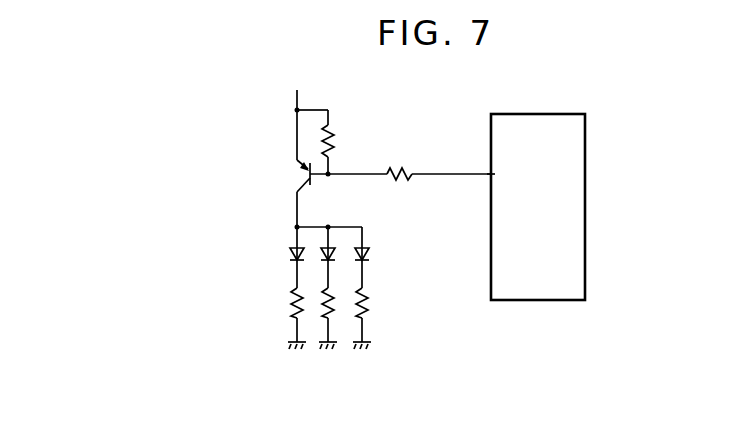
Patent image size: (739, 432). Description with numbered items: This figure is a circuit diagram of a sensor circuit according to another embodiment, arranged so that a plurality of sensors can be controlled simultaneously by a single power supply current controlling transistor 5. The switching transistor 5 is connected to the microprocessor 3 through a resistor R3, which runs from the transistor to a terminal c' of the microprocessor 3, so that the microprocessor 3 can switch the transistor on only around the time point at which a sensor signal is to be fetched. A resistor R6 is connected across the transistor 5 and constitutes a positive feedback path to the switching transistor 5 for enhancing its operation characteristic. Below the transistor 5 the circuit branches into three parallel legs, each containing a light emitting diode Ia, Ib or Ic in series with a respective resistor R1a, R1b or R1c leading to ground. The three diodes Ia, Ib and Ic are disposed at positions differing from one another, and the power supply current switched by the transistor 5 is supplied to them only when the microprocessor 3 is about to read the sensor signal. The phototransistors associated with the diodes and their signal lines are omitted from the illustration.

The transistor 5 is at (300, 173).
The resistor R6 is at (333, 140).
The resistor R3 is at (404, 170).
The microprocessor 3 is at (585, 192).
The processor input terminal c' is at (498, 175).
The diode Ia is at (290, 253).
The diode Ib is at (330, 245).
The diode Ic is at (369, 256).
The resistor R1a is at (291, 303).
The resistor R1b is at (335, 301).
The resistor R1c is at (366, 309).